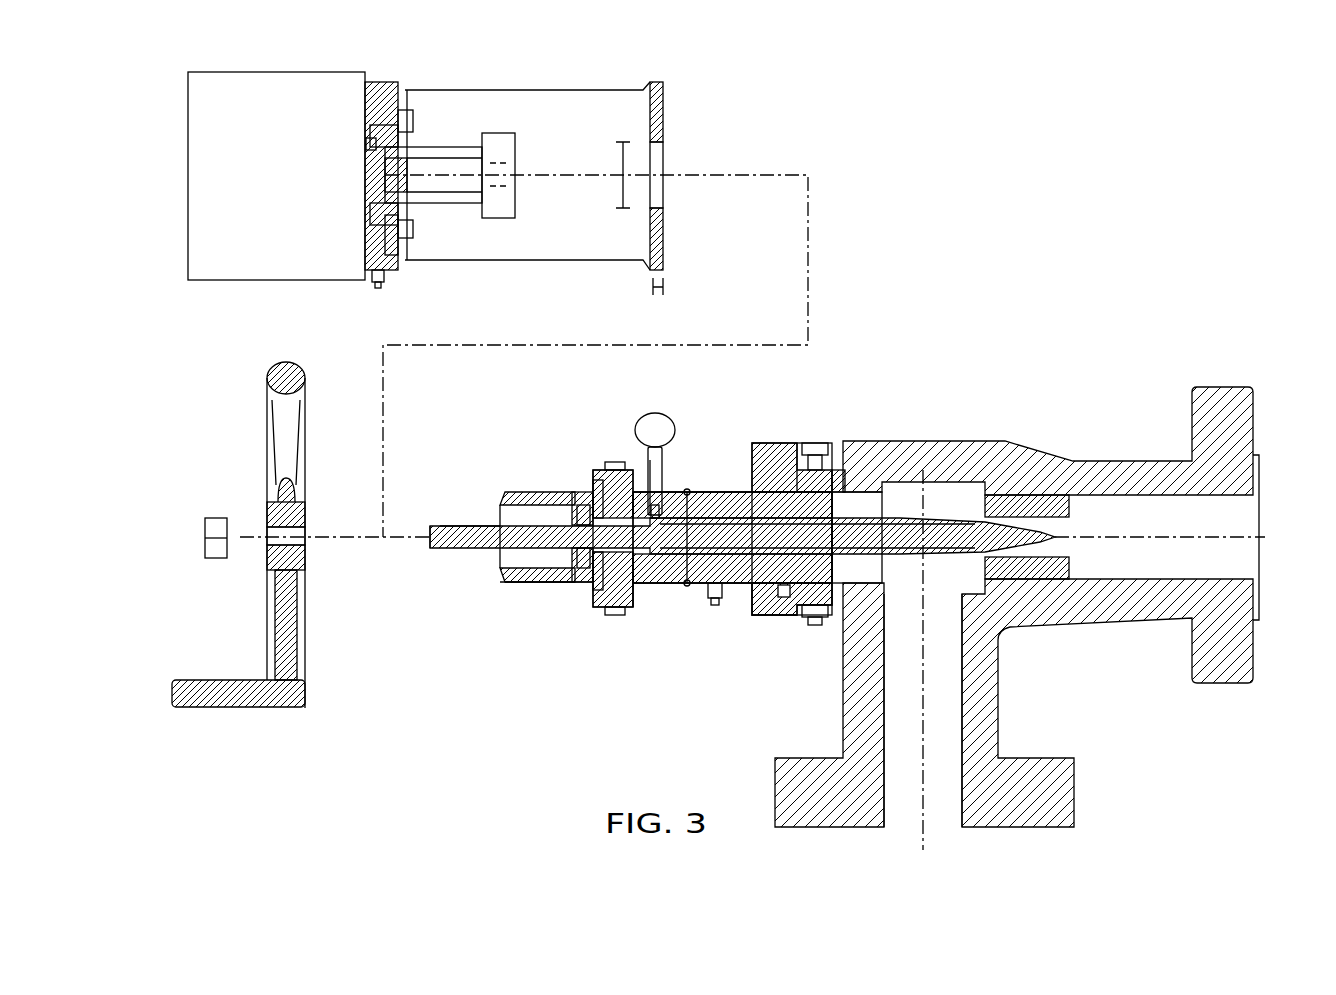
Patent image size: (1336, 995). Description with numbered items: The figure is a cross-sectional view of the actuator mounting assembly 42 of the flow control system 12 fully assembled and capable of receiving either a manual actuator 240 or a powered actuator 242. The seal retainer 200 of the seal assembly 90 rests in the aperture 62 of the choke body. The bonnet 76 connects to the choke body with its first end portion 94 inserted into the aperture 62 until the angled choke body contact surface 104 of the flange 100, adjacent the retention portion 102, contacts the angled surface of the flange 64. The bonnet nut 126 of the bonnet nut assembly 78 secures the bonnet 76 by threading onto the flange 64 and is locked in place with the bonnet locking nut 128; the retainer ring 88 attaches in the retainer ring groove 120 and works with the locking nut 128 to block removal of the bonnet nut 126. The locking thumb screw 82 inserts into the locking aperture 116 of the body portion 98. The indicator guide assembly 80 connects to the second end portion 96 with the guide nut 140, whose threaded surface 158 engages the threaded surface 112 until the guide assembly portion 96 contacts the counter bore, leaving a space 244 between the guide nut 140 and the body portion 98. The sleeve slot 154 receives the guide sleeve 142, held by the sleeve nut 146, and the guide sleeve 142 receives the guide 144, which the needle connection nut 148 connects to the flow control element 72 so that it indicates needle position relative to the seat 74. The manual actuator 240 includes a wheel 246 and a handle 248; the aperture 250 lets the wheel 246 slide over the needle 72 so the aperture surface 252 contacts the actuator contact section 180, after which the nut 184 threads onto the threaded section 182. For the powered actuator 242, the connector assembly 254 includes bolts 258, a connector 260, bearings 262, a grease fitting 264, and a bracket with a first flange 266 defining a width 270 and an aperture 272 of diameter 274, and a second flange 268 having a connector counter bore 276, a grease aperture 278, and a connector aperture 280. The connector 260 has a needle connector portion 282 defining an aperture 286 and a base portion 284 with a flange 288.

The flow control system 12 is at (1017, 615).
The actuator mounting assembly 42 is at (900, 330).
The aperture 62 is at (868, 582).
The flange 64 is at (835, 600).
The flow control element 72 is at (478, 522).
The seat 74 is at (1068, 503).
The bonnet 76 is at (695, 620).
The bonnet nut assembly 78 is at (832, 368).
The indicator guide assembly 80 is at (566, 632).
The locking thumb screw 82 is at (655, 412).
The retainer ring 88 is at (742, 490).
The seal assembly 90 is at (884, 588).
The first end portion 94 is at (812, 622).
The second end portion 96 is at (572, 385).
The body portion 98 is at (712, 448).
The flange 100 is at (770, 596).
The retention portion 102 is at (810, 618).
The angled choke body contact surface 104 is at (797, 440).
The threaded surface 112 is at (622, 612).
The locking aperture 116 is at (658, 500).
The retainer ring groove 120 is at (720, 606).
The bonnet nut 126 is at (768, 443).
The bonnet locking nut 128 is at (815, 443).
The guide nut 140 is at (613, 470).
The guide sleeve 142 is at (550, 582).
The guide 144 is at (506, 507).
The sleeve nut 146 is at (598, 478).
The needle connection nut 148 is at (580, 505).
The sleeve slot 154 is at (592, 590).
The threaded surface 158 is at (634, 612).
The actuator contact section 180 is at (478, 550).
The threaded section 182 is at (436, 550).
The nut 184 is at (212, 516).
The seal retainer 200 is at (838, 488).
The manual actuator 240 is at (259, 600).
The powered actuator 242 is at (188, 160).
The space 244 is at (632, 470).
The wheel 246 is at (280, 627).
The handle 248 is at (226, 708).
The aperture 250 is at (268, 532).
The aperture surface 252 is at (300, 540).
The connector assembly 254 is at (562, 88).
The bolts 258 is at (410, 112).
The connector 260 is at (470, 122).
The bearings 262 is at (368, 208).
The grease fitting 264 is at (383, 284).
The first flange 266 is at (662, 84).
The second flange 268 is at (372, 84).
The width 270 is at (660, 296).
The aperture 272 is at (664, 168).
The diameter 274 is at (620, 168).
The connector counter bore 276 is at (368, 130).
The grease aperture 278 is at (395, 232).
The connector aperture 280 is at (362, 146).
The needle connector portion 282 is at (500, 218).
The base portion 284 is at (368, 190).
The aperture 286 is at (505, 190).
The flange 288 is at (368, 162).